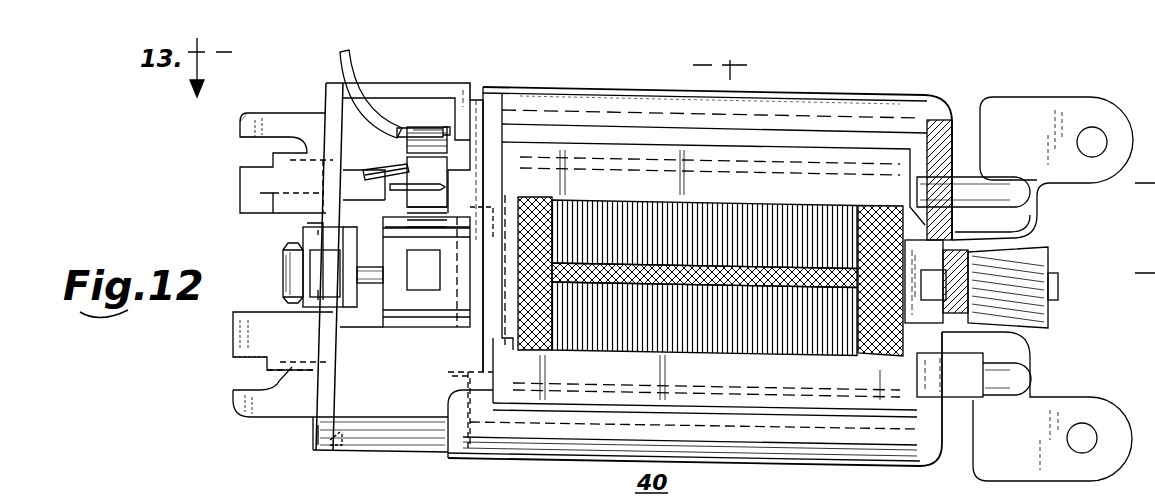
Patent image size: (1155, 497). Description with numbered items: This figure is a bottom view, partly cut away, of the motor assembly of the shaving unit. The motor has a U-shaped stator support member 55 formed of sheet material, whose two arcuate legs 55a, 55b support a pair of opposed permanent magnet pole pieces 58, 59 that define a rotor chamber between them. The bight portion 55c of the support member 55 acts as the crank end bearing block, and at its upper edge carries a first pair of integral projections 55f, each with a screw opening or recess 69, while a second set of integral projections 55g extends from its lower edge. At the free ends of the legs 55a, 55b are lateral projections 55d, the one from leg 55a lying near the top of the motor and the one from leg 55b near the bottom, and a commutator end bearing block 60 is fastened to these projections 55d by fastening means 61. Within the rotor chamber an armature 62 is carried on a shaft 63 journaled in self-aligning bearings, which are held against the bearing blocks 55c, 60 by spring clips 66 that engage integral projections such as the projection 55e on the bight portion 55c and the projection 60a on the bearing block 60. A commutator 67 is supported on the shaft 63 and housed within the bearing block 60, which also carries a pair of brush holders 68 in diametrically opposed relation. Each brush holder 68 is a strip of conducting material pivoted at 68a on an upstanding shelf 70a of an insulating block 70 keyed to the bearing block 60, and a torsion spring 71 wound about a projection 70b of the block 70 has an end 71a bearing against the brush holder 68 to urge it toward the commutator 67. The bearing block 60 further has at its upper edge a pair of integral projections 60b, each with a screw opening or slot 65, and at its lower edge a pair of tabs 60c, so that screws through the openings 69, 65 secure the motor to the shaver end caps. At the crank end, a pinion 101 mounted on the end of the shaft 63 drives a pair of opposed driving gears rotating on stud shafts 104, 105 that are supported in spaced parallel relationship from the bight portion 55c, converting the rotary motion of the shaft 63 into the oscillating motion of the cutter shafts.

The U-shaped stator support member 55 is at (912, 97).
The leg of stator support member 55a is at (752, 90).
The leg of stator support member 55b is at (790, 462).
The bight portion 55c is at (948, 130).
The lateral projections 55d is at (448, 390).
The integral projection 55e is at (945, 270).
The integral projections 55f is at (1092, 112).
The integral projections 55g is at (975, 372).
The permanent magnet pole piece 58 is at (714, 196).
The permanent magnet pole piece 59 is at (735, 358).
The commutator end bearing block 60 is at (388, 378).
The integral projection 60a is at (328, 268).
The integral projections 60b is at (277, 118).
The projections or tabs 60c is at (300, 160).
The fastening means 61 is at (307, 430).
The armature 62 is at (608, 213).
The shaft 63 is at (367, 275).
The screw opening or slot 65 is at (257, 143).
The spring clips 66 is at (325, 233).
The commutator 67 is at (395, 275).
The brush holders 68 is at (465, 200).
The pivot 68a is at (427, 150).
The screw opening or recess 69 is at (1105, 142).
The insulating blocks 70 is at (443, 107).
The upstanding shelf 70a is at (378, 130).
The projection 70b is at (383, 197).
The torsion spring 71 is at (363, 178).
The spring end 71a is at (446, 190).
The pinion 101 is at (1045, 262).
The stud shaft 104 is at (990, 193).
The stud shaft 105 is at (1003, 395).